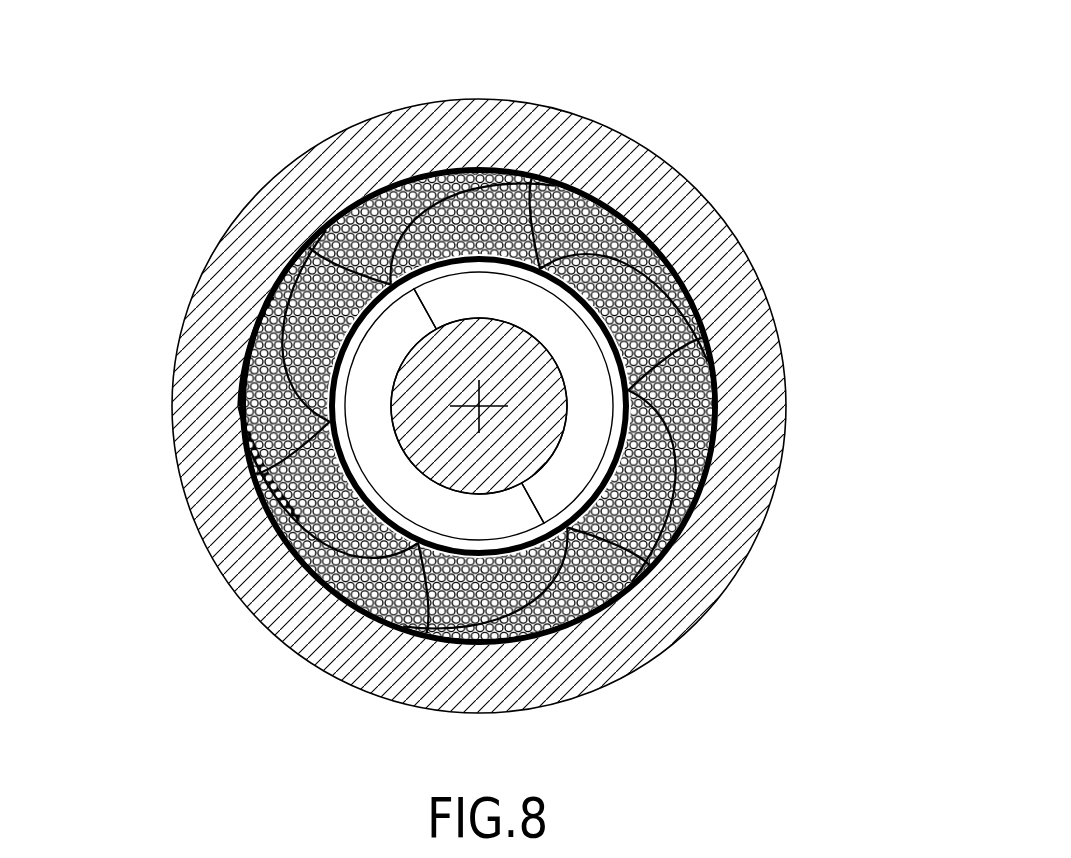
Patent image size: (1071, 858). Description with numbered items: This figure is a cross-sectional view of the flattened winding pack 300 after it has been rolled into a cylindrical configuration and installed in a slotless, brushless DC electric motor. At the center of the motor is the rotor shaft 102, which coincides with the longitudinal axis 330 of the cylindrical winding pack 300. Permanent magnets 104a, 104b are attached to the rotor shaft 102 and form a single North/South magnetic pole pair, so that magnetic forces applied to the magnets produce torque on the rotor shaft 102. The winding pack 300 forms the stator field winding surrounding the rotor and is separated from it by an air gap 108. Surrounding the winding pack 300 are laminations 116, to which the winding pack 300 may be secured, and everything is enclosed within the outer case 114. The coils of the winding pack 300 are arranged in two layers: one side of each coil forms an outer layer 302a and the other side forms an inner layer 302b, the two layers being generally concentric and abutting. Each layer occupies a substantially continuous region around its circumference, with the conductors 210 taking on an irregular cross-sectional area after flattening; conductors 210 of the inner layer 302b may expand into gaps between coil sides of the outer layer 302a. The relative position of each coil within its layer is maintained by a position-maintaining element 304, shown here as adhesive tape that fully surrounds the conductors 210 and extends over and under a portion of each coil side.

The outer case 114 is at (577, 115).
The laminations 116 is at (682, 200).
The winding pack 300 is at (560, 187).
The outer layer 302a is at (253, 437).
The inner layer 302b is at (287, 560).
The conductor 210 is at (357, 222).
The position-maintaining element 304 is at (703, 488).
The air gap 108 is at (565, 517).
The permanent magnet 104a is at (507, 314).
The permanent magnet 104b is at (507, 528).
The rotor shaft 102 is at (455, 388).
The longitudinal axis 330 is at (480, 406).